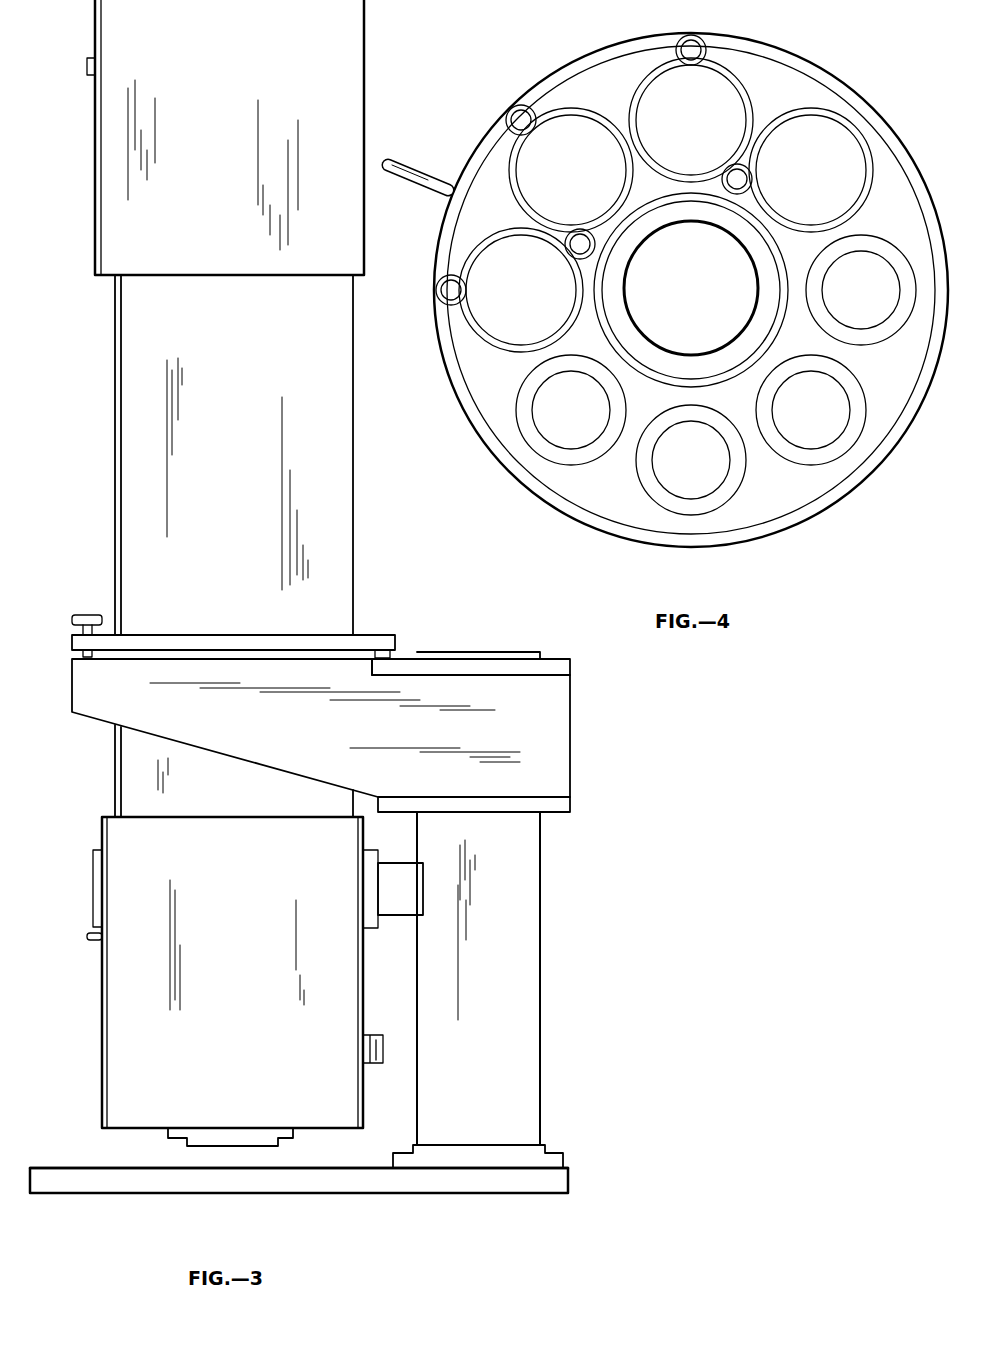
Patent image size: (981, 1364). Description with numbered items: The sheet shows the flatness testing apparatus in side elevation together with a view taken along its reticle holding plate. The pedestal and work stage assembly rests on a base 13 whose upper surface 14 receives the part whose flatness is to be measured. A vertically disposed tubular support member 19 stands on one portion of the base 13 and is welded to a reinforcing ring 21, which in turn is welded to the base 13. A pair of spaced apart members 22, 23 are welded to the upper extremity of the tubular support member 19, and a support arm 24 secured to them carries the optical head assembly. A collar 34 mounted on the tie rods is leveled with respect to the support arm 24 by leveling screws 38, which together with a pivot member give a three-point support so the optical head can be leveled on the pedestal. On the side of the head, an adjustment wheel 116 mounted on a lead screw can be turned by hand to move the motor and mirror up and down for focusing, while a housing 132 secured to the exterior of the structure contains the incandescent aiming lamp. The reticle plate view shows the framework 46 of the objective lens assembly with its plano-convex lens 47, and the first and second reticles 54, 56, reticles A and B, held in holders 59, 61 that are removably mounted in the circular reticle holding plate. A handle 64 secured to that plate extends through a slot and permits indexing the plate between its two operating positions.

In FIG. 3, the base 13 is at (560, 1180).
In FIG. 3, the upper surface 14 is at (62, 1172).
In FIG. 3, the tubular support member 19 is at (532, 1033).
In FIG. 3, the reinforcing ring 21 is at (548, 1166).
In FIG. 3, the spaced apart member 22 is at (565, 668).
In FIG. 3, the spaced apart member 23 is at (565, 805).
In FIG. 3, the support arm 24 is at (557, 745).
In FIG. 3, the collar 34 is at (385, 643).
In FIG. 3, the leveling screw 38 is at (82, 615).
In FIG. 3, the framework 46 is at (288, 1132).
In FIG. 4, the framework 46 is at (732, 358).
In FIG. 4, the plano-convex lens 47 is at (710, 279).
In FIG. 4, the first reticle 54 is at (835, 318).
In FIG. 4, the second reticle 56 is at (573, 145).
In FIG. 4, the holder 59 is at (864, 345).
In FIG. 4, the holder 61 is at (515, 166).
In FIG. 4, the handle 64 is at (433, 188).
In FIG. 3, the adjustment wheel 116 is at (87, 67).
In FIG. 3, the housing 132 is at (368, 858).